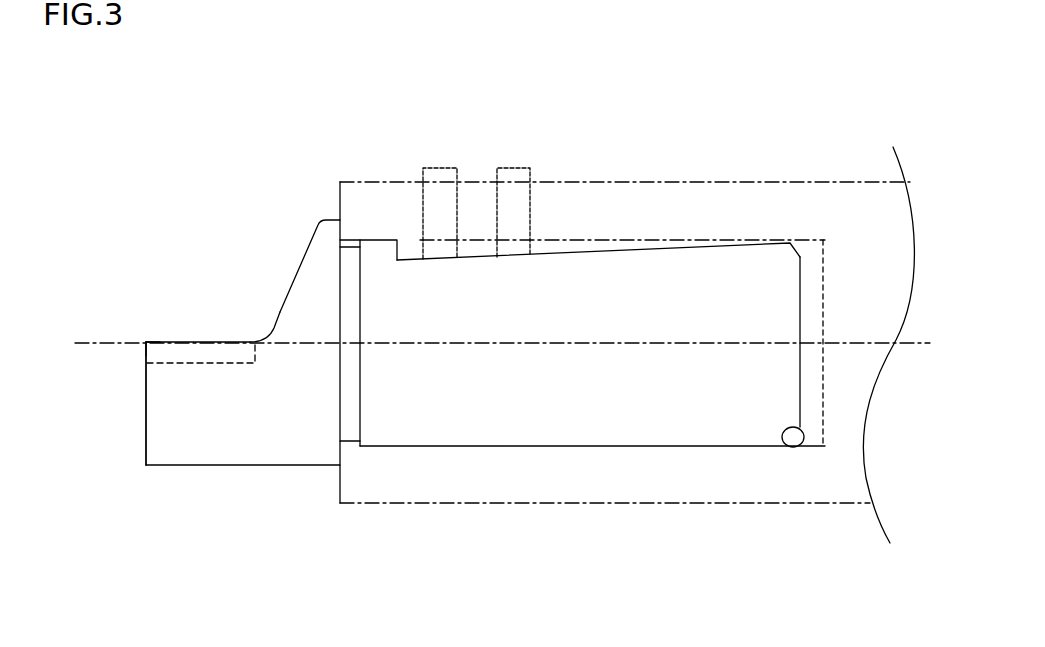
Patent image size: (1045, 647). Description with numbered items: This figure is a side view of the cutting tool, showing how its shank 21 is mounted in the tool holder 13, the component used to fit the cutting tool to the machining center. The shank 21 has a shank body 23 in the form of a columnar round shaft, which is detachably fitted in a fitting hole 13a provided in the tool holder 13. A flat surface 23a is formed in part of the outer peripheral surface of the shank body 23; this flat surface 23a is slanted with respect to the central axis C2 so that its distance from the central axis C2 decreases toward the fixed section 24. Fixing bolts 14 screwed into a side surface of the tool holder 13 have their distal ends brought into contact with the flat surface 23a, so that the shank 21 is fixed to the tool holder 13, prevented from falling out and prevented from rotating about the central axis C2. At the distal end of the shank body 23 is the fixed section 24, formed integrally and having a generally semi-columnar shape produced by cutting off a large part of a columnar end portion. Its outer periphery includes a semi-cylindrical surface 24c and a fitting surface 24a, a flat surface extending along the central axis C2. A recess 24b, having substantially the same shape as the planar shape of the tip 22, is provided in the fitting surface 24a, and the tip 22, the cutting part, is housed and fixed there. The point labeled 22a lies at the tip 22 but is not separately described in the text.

The tool holder 13 is at (598, 503).
The fitting hole 13a is at (782, 447).
The fixing bolts 14 is at (433, 167).
The shank 21 is at (397, 526).
The tip 22 is at (144, 347).
The abutting point 22a is at (140, 340).
The shank body 23 is at (497, 447).
The flat surface 23a is at (473, 243).
The fixed section 24 is at (270, 442).
The fitting surface 24a is at (255, 337).
The recess 24b is at (208, 342).
The semi-cylindrical surface 24c is at (157, 467).
The central axis C2 is at (907, 345).